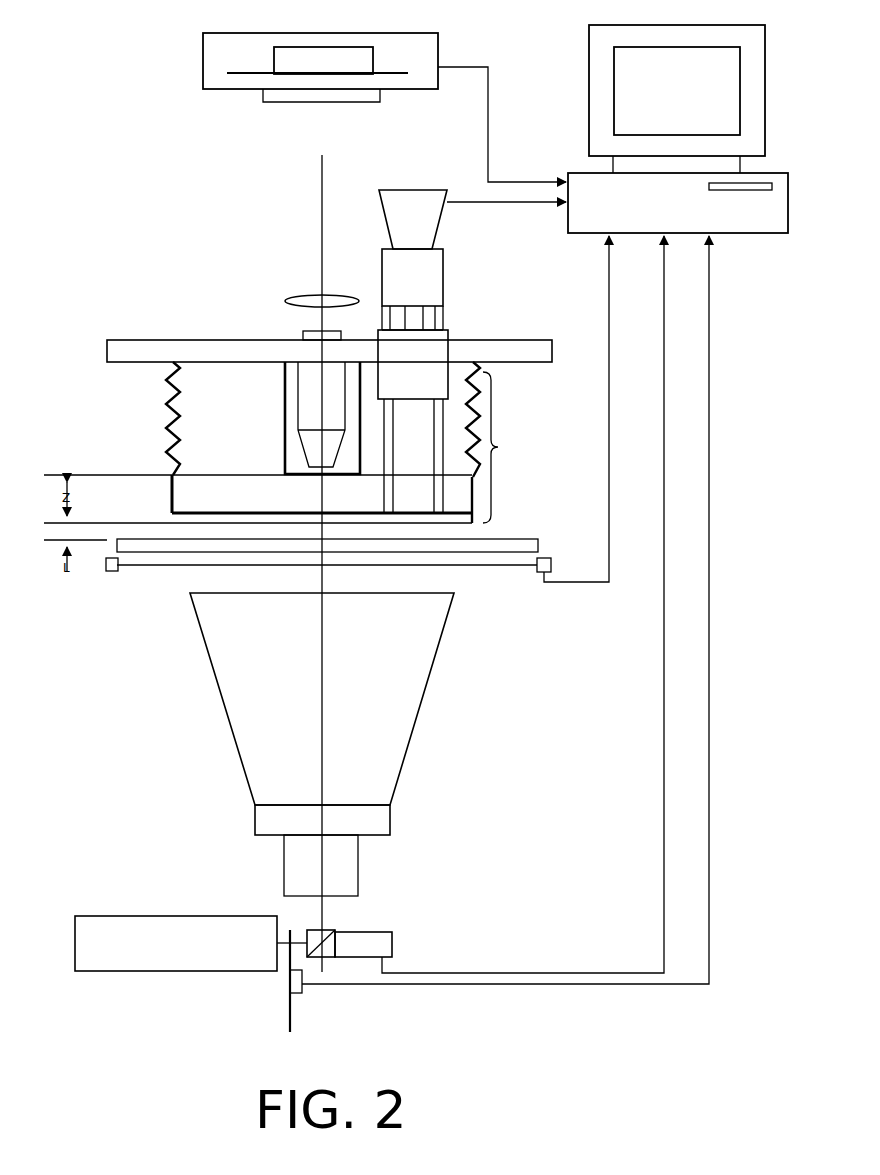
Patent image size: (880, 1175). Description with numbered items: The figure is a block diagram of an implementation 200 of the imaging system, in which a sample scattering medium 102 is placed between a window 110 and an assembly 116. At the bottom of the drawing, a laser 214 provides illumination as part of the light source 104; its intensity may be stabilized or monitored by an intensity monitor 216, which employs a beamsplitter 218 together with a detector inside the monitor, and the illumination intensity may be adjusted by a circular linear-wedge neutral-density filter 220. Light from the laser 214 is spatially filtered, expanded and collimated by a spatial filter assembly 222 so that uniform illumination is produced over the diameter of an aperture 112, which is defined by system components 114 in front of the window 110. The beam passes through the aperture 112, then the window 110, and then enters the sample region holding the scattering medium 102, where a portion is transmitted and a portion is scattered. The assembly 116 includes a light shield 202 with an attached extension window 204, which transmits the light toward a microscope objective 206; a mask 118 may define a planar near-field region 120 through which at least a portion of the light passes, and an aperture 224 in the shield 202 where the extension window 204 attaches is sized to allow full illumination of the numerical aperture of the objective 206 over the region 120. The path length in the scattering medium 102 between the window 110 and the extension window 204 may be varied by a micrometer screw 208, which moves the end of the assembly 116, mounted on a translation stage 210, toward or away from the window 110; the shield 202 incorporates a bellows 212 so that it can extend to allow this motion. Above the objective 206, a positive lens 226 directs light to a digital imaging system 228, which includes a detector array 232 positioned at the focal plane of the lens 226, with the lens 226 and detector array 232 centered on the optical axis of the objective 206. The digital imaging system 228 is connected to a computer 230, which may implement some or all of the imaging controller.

The implementation 200 is at (51, 109).
The digital imaging system 228 is at (438, 50).
The detector array 232 is at (365, 47).
The computer 230 is at (775, 173).
The micrometer screw 208 is at (393, 190).
The translation stage 210 is at (413, 381).
The positive lens 226 is at (306, 293).
The bellows 212 is at (165, 410).
The assembly 116 is at (505, 442).
The microscope objective 206 is at (285, 377).
The mask 118 is at (284, 430).
The near-field region 120 is at (323, 476).
The light shield 202 is at (228, 510).
The aperture 224 is at (304, 512).
The extension window 204 is at (165, 521).
The scattering medium 102 is at (329, 534).
The window 110 is at (532, 539).
The aperture 112 is at (245, 566).
The system components 114 is at (105, 572).
The spatial filter assembly 222 is at (222, 703).
The light source 104 is at (490, 710).
The laser 214 is at (165, 916).
The circular linear-wedge neutral-density filter 220 is at (290, 996).
The beamsplitter 218 is at (322, 931).
The intensity monitor 216 is at (378, 931).